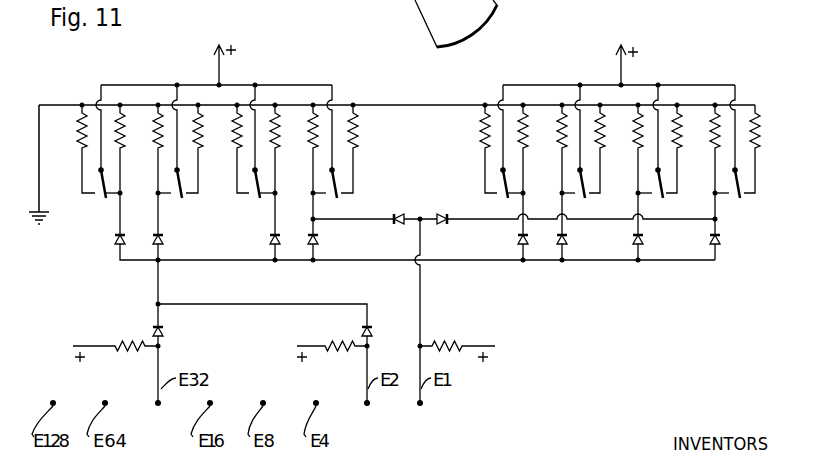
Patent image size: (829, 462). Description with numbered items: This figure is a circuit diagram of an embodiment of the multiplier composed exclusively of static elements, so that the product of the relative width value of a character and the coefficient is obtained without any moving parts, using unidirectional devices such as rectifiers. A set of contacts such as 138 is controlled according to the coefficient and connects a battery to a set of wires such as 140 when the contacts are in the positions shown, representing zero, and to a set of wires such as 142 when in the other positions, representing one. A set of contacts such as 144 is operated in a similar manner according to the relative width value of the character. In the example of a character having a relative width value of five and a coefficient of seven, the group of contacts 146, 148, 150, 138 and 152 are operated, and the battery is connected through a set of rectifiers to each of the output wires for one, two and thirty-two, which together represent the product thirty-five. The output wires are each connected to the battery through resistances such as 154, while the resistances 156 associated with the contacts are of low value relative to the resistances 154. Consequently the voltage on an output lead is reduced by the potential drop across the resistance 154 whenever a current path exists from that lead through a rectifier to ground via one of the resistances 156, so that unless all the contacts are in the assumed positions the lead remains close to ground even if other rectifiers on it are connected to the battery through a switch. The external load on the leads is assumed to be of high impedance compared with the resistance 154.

The contacts 138 is at (663, 183).
The wires 140 is at (524, 176).
The wires 142 is at (485, 178).
The contacts 144 is at (104, 199).
The contacts 146 is at (181, 182).
The contacts 148 is at (337, 182).
The contacts 150 is at (586, 183).
The contacts 152 is at (741, 183).
The resistance 154 is at (113, 341).
The resistances 156 is at (114, 143).